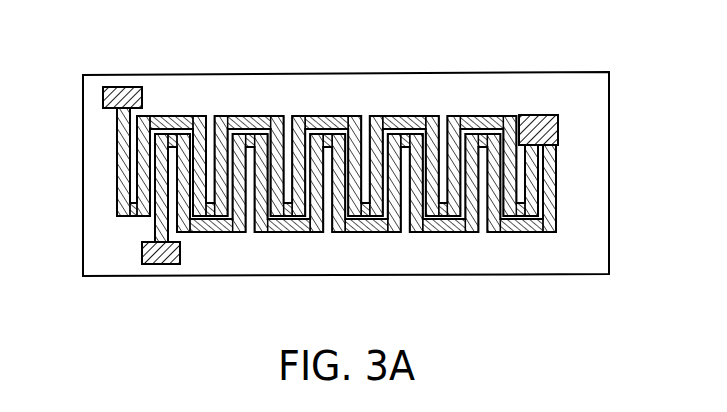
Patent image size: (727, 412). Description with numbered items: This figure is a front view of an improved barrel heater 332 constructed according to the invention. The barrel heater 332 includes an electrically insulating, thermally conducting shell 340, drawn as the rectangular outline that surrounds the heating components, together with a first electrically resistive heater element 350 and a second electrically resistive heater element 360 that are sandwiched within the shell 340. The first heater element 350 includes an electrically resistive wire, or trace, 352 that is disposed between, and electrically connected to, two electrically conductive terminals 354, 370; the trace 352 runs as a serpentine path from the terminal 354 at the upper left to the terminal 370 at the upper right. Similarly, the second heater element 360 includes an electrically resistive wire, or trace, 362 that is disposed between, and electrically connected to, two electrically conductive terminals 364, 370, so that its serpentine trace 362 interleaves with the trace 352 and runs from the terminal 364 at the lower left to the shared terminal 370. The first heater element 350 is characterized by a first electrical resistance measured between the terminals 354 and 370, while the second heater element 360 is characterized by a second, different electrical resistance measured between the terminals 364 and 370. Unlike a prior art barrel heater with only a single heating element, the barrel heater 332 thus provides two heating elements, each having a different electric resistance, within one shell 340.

The barrel heater 332 is at (312, 189).
The shell 340 is at (508, 274).
The first electrically resistive heater element 350 is at (117, 152).
The electrically resistive wire or trace 352 is at (280, 148).
The electrically conductive terminal 354 is at (123, 87).
The second electrically resistive heater element 360 is at (553, 207).
The electrically resistive wire or trace 362 is at (378, 198).
The electrically conductive terminal 364 is at (160, 264).
The electrically conductive terminal 370 is at (527, 115).